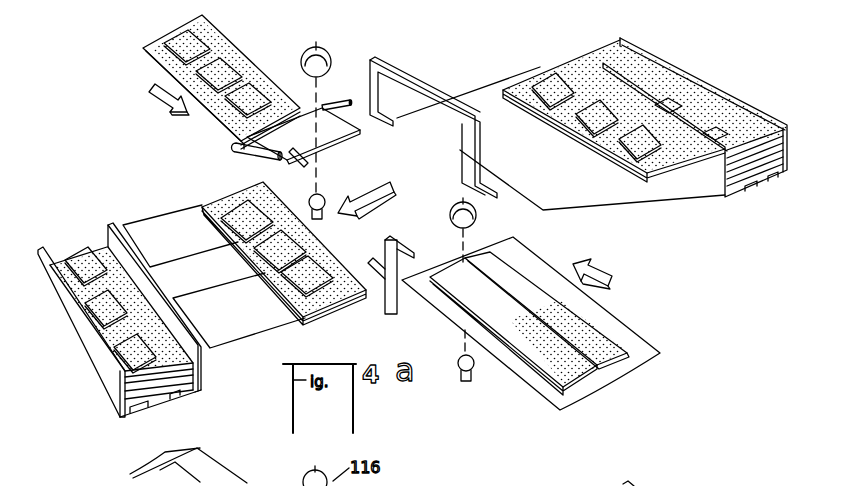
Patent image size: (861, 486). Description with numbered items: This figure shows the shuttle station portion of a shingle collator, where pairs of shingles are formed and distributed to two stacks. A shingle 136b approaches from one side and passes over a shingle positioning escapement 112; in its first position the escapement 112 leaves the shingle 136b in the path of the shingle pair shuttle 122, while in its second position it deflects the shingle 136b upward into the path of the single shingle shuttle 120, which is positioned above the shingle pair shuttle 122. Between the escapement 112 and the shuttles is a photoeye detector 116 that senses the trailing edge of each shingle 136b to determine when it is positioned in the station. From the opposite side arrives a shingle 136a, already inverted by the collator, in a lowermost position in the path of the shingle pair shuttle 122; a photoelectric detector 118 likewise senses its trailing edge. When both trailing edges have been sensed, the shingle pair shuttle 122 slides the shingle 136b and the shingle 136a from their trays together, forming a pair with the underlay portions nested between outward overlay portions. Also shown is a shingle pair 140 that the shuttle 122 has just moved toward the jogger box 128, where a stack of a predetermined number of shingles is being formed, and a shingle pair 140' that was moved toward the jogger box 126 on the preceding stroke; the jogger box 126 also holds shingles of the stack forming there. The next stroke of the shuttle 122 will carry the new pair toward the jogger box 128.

The shingle 136b is at (145, 48).
The shingle positioning escapement 112 is at (262, 150).
The photoeye detector 116 is at (328, 55).
The single shingle shuttle 120 is at (419, 90).
The shingle pair 140 is at (645, 133).
The jogger box 128 is at (779, 181).
The jogger box 126 is at (42, 250).
The shingle pair 140' is at (249, 253).
The shingle pair shuttle 122 is at (382, 313).
The photoelectric detector 118 is at (478, 219).
The shingle 136a is at (632, 353).